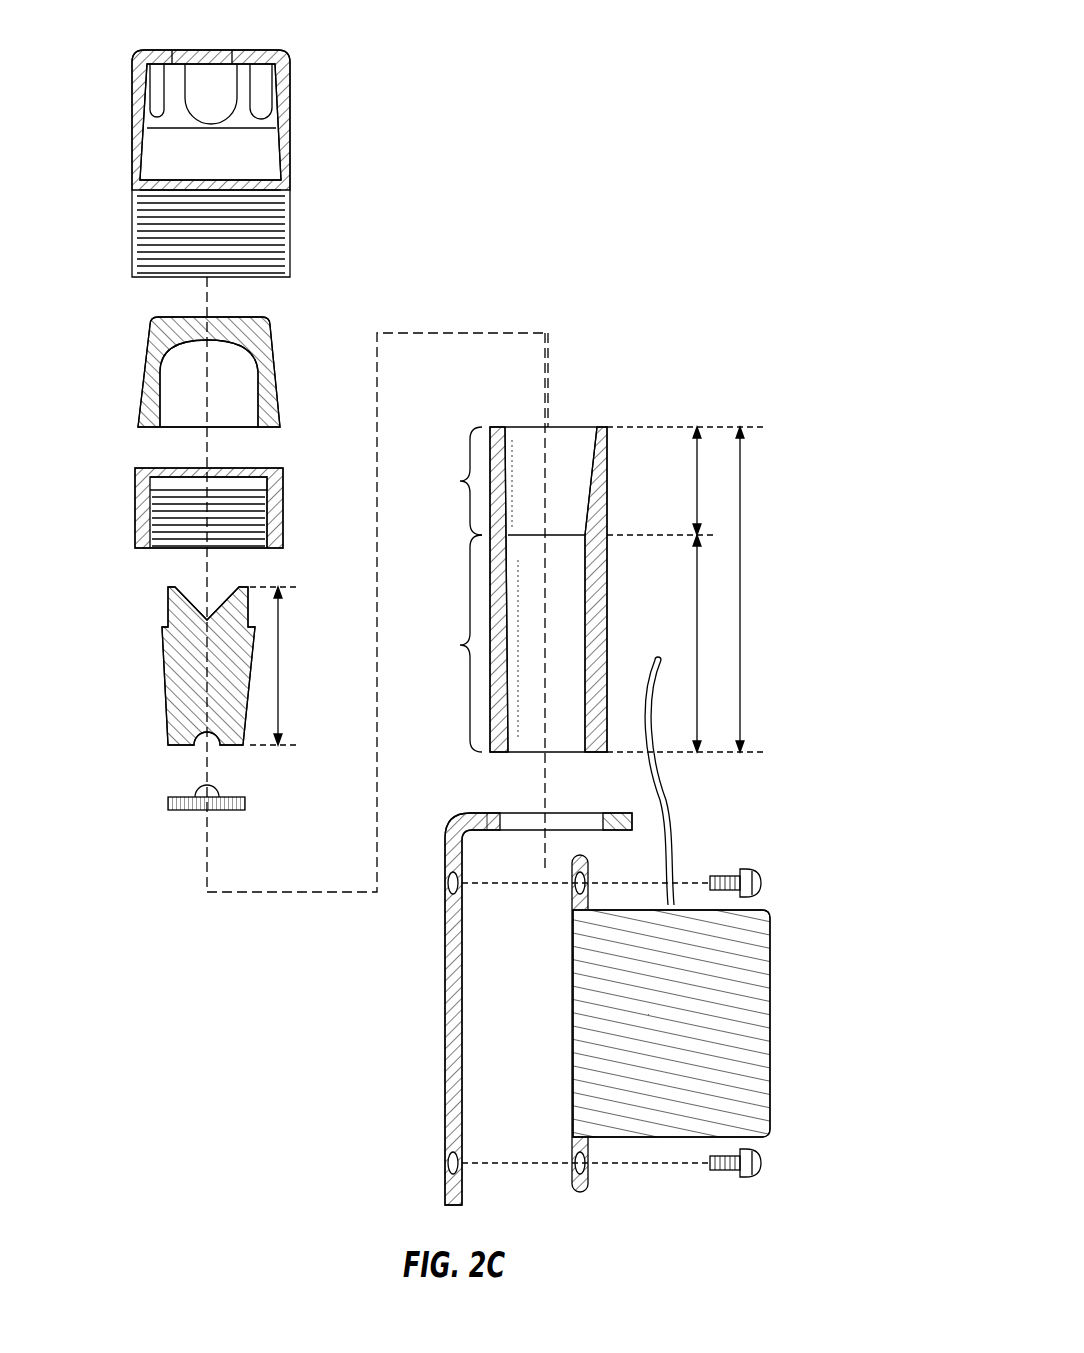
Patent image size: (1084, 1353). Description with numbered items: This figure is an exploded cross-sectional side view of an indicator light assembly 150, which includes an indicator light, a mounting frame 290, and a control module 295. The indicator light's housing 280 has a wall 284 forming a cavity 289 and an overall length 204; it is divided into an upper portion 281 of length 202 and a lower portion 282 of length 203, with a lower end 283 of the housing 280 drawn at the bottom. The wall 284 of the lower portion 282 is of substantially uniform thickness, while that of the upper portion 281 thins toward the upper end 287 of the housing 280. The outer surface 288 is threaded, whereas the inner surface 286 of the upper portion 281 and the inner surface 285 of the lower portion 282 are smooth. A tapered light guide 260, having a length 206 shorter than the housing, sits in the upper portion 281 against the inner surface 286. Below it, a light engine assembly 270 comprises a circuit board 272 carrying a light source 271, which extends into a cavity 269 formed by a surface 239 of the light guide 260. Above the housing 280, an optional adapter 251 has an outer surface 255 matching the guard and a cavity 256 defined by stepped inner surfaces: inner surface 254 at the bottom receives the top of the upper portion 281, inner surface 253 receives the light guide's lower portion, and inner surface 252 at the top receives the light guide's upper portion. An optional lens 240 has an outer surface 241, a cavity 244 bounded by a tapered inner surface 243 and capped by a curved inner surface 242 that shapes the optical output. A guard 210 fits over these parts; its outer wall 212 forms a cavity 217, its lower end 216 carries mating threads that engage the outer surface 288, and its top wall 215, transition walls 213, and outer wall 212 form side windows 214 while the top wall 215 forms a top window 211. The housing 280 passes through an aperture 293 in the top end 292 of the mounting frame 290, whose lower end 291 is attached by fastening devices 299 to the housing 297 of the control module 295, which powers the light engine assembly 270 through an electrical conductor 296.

The indicator light assembly 150 is at (773, 100).
The guard 210 is at (290, 80).
The top window 211 is at (210, 62).
The outer wall 212 is at (290, 136).
The transition walls 213 is at (186, 76).
The side windows 214 is at (205, 100).
The top wall 215 is at (256, 56).
The lower end 216 is at (287, 275).
The cavity 217 is at (193, 244).
The lens 240 is at (142, 361).
The outer surface 241 is at (272, 321).
The inner surface 242 is at (256, 356).
The inner surface 243 is at (266, 395).
The cavity 244 is at (191, 402).
The adapter 251 is at (141, 470).
The inner surface 252 is at (225, 468).
The inner surface 253 is at (149, 490).
The inner surface 254 is at (282, 526).
The outer surface 255 is at (285, 488).
The cavity 256 is at (192, 522).
The light guide 260 is at (163, 650).
The surface 239 is at (205, 738).
The length 206 is at (283, 670).
The cavity 269 is at (206, 750).
The light engine assembly 270 is at (169, 802).
The light source 271 is at (216, 797).
The circuit board 272 is at (224, 812).
The housing 280 is at (608, 493).
The upper portion 281 is at (446, 481).
The lower portion 282 is at (446, 643).
The housing bottom end 283 is at (595, 752).
The wall 284 is at (600, 614).
The inner surface 285 is at (599, 588).
The inner surface 286 is at (516, 490).
The upper end 287 is at (600, 427).
The outer surface 288 is at (606, 650).
The cavity 289 is at (537, 730).
The length 202 is at (700, 486).
The length 203 is at (700, 645).
The length 204 is at (742, 586).
The mounting frame 290 is at (446, 978).
The lower end 291 is at (445, 1072).
The top end 292 is at (472, 813).
The aperture 293 is at (540, 832).
The control module 295 is at (773, 983).
The electrical conductor 296 is at (667, 790).
The housing 297 is at (774, 1046).
The fastening devices 299 is at (758, 885).